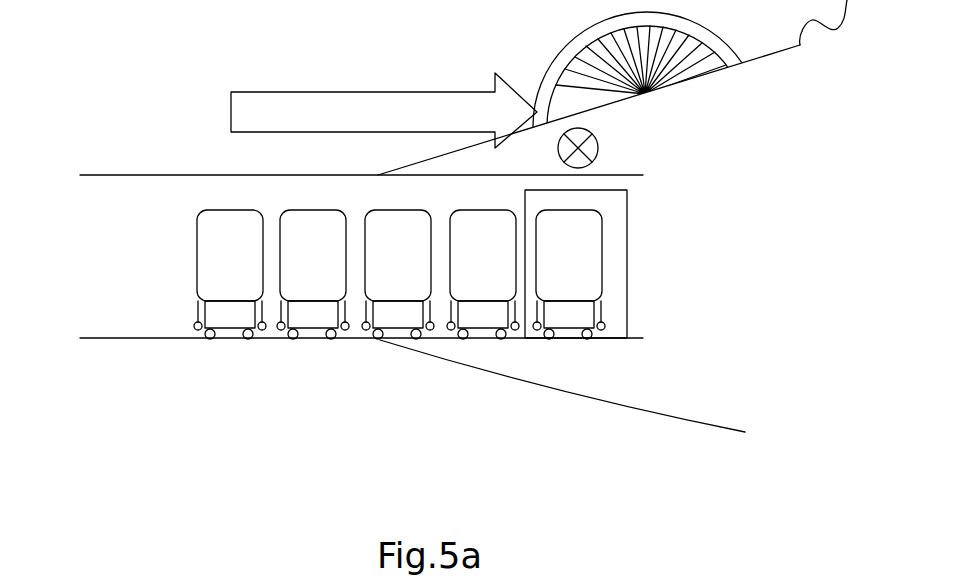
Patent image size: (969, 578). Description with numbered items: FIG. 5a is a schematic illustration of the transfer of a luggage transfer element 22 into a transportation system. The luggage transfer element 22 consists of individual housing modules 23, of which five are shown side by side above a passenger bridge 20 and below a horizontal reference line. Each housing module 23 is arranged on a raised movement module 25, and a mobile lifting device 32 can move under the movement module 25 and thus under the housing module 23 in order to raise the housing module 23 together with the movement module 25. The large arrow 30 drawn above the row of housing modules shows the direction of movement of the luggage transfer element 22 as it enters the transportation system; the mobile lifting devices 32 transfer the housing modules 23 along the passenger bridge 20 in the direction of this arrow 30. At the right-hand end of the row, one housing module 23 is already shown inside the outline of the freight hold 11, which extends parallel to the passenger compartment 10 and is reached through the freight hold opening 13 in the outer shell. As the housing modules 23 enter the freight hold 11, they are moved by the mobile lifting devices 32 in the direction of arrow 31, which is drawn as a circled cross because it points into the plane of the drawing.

The passenger compartment 10 is at (740, 148).
The freight hold 11 is at (617, 240).
The freight hold opening 13 is at (630, 272).
The passenger bridge 20 is at (195, 175).
The luggage transfer element 22 is at (140, 243).
The housing module 23 is at (317, 222).
The movement module 25 is at (198, 338).
The arrow 30 is at (300, 100).
The arrow 31 is at (590, 130).
The mobile lifting device 32 is at (235, 326).